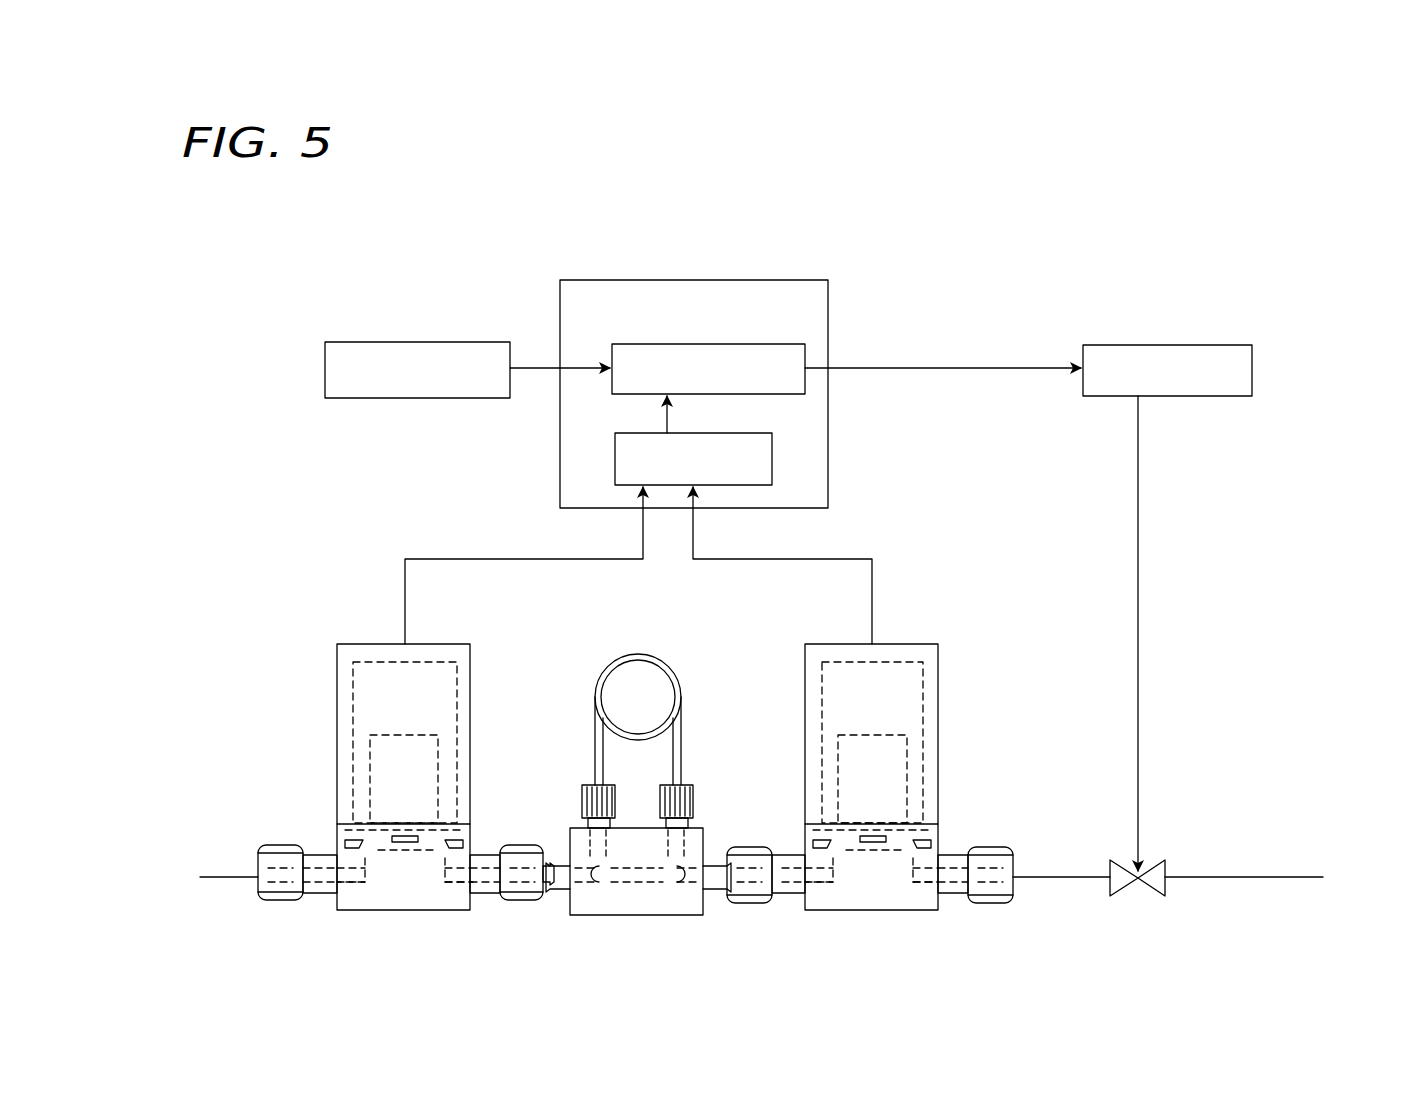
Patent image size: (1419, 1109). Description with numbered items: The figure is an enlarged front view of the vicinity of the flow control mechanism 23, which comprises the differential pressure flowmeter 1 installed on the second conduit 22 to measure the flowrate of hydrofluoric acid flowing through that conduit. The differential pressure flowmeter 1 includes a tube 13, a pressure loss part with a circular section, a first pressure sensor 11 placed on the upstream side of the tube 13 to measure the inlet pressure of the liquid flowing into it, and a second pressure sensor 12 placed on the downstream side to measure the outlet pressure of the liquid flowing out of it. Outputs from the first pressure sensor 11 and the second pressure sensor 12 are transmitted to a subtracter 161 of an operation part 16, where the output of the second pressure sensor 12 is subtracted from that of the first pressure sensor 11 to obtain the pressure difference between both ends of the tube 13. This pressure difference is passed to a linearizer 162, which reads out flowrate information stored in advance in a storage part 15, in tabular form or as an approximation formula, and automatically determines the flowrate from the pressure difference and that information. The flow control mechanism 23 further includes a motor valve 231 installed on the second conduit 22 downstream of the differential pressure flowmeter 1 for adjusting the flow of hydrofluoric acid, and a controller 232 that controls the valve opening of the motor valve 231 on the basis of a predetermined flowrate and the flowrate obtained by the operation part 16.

The differential pressure flowmeter 1 is at (325, 578).
The first pressure sensor 11 is at (337, 698).
The second pressure sensor 12 is at (938, 703).
The tube 13 is at (638, 654).
The storage part 15 is at (325, 372).
The operation part 16 is at (759, 398).
The subtracter 161 is at (772, 460).
The linearizer 162 is at (805, 385).
The second conduit 22 is at (1065, 880).
The flow control mechanism 23 is at (337, 257).
The motor valve 231 is at (1150, 862).
The controller 232 is at (1252, 370).